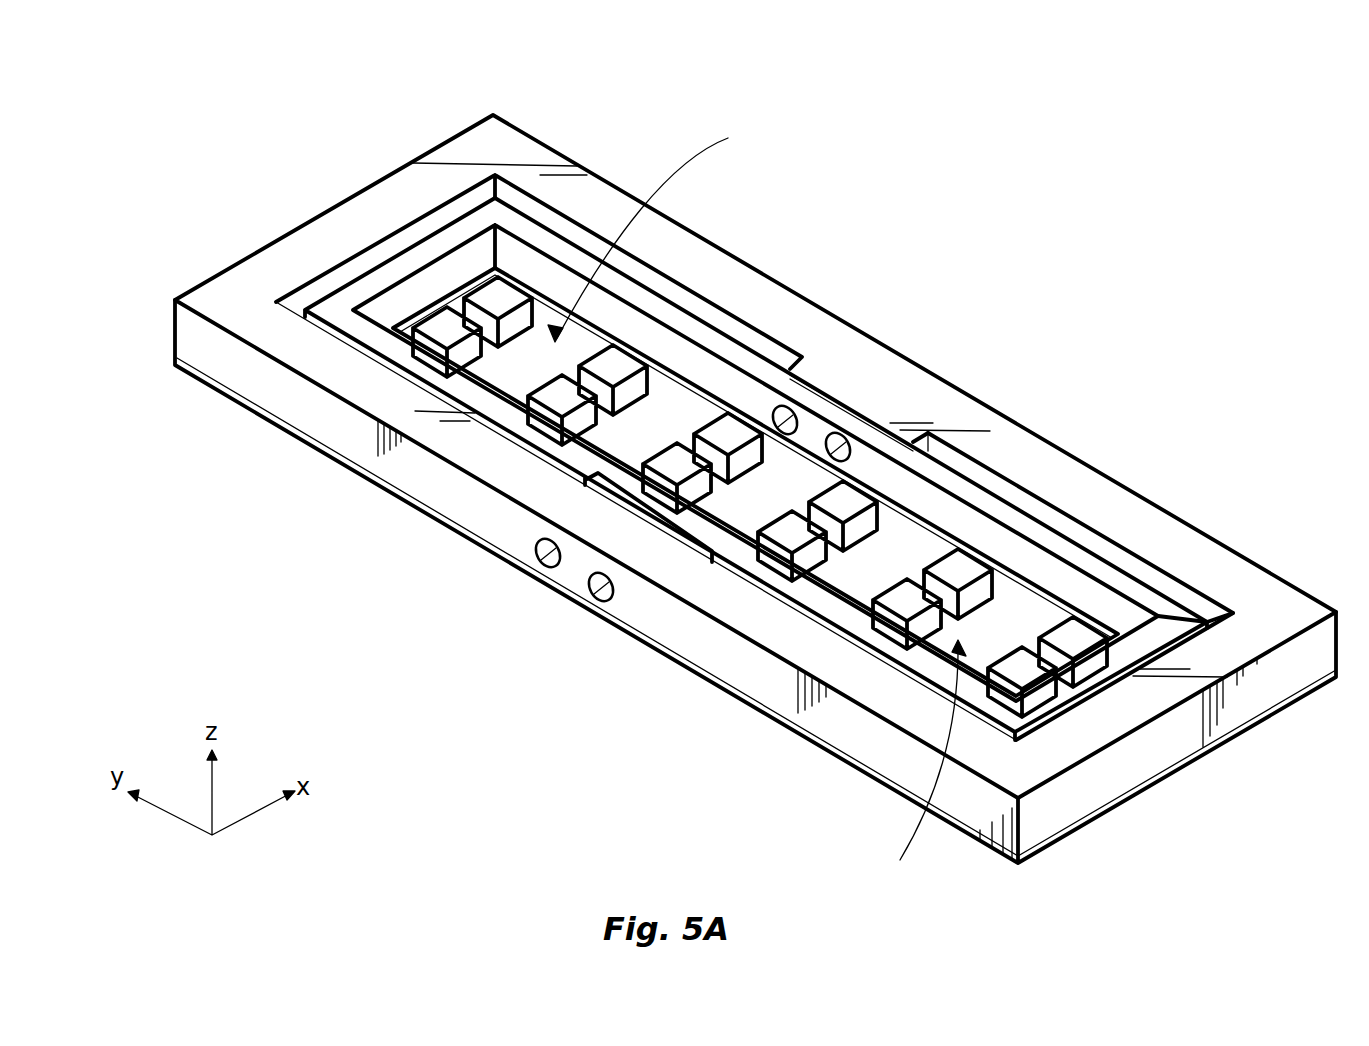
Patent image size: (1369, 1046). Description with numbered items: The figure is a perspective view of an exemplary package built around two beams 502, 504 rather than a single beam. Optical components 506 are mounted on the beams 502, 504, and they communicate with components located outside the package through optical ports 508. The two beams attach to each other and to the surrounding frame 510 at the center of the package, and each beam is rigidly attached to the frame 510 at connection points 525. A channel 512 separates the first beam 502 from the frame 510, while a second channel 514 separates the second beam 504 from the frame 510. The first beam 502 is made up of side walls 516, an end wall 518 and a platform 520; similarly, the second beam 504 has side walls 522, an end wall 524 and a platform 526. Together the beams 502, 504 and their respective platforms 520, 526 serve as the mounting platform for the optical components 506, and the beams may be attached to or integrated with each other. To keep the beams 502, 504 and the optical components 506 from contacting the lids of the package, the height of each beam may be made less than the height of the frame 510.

The beam 502 is at (658, 227).
The beam 504 is at (919, 767).
The optical components 506 is at (668, 463).
The optical ports 508 is at (602, 590).
The frame 510 is at (370, 397).
The channel 512 is at (368, 260).
The channel 514 is at (1110, 687).
The side walls 516 is at (517, 227).
The end wall 518 is at (415, 257).
The platform 520 is at (693, 405).
The side walls 522 is at (1007, 513).
The end wall 524 is at (1177, 610).
The connection points 525 is at (680, 540).
The platform 526 is at (1020, 607).